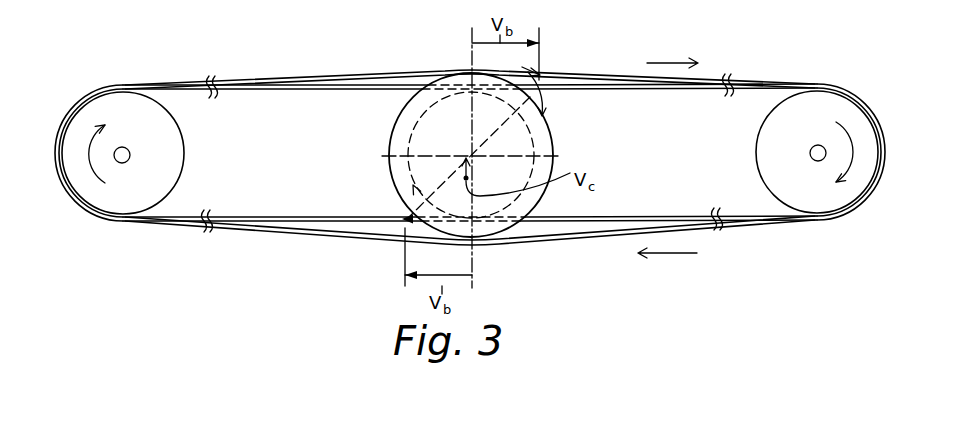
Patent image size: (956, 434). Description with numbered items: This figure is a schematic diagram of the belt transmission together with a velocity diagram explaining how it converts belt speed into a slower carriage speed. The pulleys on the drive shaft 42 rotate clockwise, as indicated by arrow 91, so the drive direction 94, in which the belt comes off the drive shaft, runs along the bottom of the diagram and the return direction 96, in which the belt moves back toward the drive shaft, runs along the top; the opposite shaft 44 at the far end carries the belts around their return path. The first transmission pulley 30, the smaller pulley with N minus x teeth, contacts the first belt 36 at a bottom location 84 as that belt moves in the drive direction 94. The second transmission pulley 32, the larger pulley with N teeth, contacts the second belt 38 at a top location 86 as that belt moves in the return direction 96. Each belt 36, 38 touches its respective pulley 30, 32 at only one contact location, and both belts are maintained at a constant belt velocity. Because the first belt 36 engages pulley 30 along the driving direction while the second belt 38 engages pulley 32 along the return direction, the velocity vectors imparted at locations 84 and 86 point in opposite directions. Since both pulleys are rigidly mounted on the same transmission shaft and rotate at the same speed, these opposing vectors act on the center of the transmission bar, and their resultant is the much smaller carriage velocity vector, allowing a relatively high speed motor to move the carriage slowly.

The first transmission pulley 30 is at (400, 120).
The second transmission pulley 32 is at (553, 124).
The first belt 36 is at (362, 217).
The second belt 38 is at (557, 72).
The drive shaft 42 is at (818, 161).
The pulley shaft 44 is at (122, 163).
The bottom location 84 is at (478, 222).
The top location 86 is at (466, 72).
The arrow 91 is at (876, 188).
The drive direction 94 is at (667, 255).
The return direction 96 is at (670, 62).